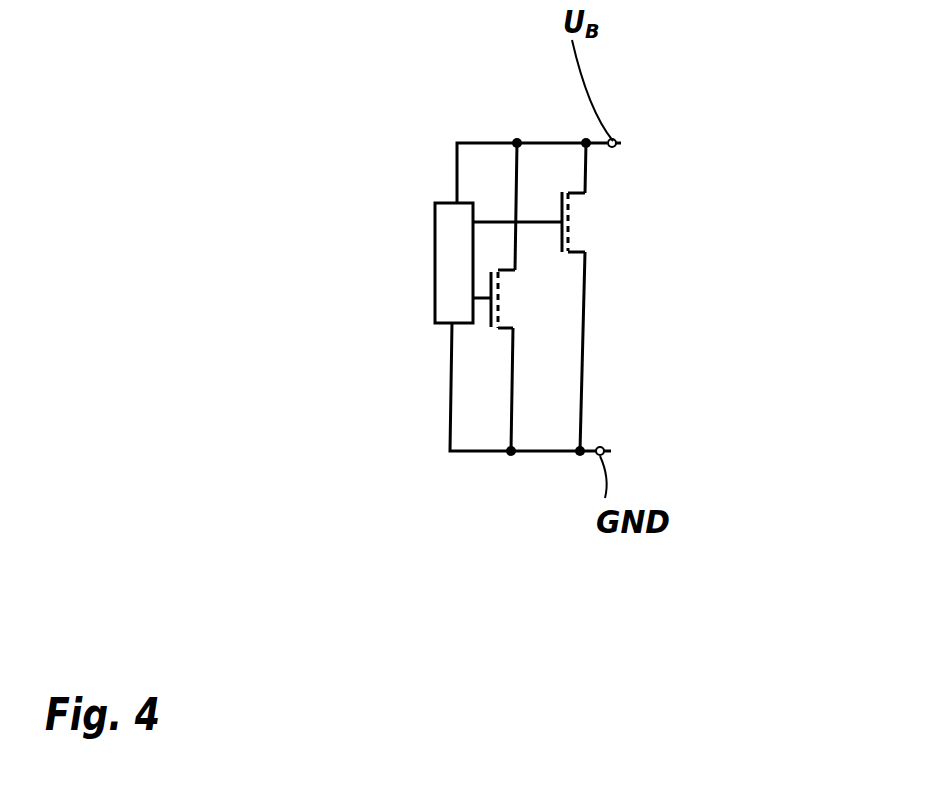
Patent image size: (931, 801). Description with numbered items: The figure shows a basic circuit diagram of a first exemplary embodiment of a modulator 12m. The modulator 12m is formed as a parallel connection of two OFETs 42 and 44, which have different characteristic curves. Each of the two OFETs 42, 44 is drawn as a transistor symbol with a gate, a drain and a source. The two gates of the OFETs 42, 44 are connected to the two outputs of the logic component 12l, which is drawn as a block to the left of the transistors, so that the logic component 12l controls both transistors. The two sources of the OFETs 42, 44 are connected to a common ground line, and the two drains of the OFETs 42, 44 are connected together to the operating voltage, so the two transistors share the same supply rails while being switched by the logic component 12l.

The logic component 12l is at (443, 247).
The modulator 12m is at (672, 315).
The OFET 42 is at (513, 297).
The OFET 44 is at (585, 213).